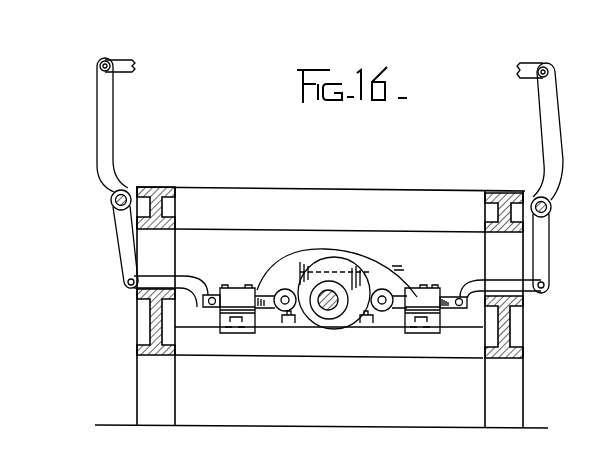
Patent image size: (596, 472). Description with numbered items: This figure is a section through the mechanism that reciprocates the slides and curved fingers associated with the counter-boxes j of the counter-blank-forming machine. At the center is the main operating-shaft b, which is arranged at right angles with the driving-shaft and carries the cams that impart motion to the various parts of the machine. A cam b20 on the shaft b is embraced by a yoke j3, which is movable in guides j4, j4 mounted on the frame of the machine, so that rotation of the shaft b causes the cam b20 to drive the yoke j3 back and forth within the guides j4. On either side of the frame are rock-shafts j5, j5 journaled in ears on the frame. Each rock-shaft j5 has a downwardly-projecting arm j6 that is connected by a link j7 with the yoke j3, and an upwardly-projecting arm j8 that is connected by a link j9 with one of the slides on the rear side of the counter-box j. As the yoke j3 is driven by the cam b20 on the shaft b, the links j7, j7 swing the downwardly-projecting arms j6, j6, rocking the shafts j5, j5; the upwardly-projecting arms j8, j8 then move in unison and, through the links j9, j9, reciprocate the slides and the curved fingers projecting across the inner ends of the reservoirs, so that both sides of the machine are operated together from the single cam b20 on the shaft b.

The counter-box j is at (557, 123).
The yoke j3 is at (378, 272).
The guides j4 is at (237, 296).
The rock-shafts j5 is at (572, 208).
The downwardly-projecting arms j6 is at (555, 263).
The links j7 is at (490, 281).
The upwardly-projecting arms j8 is at (103, 135).
The links j9 is at (123, 62).
The main operating-shaft b is at (327, 306).
The cam b20 is at (343, 275).